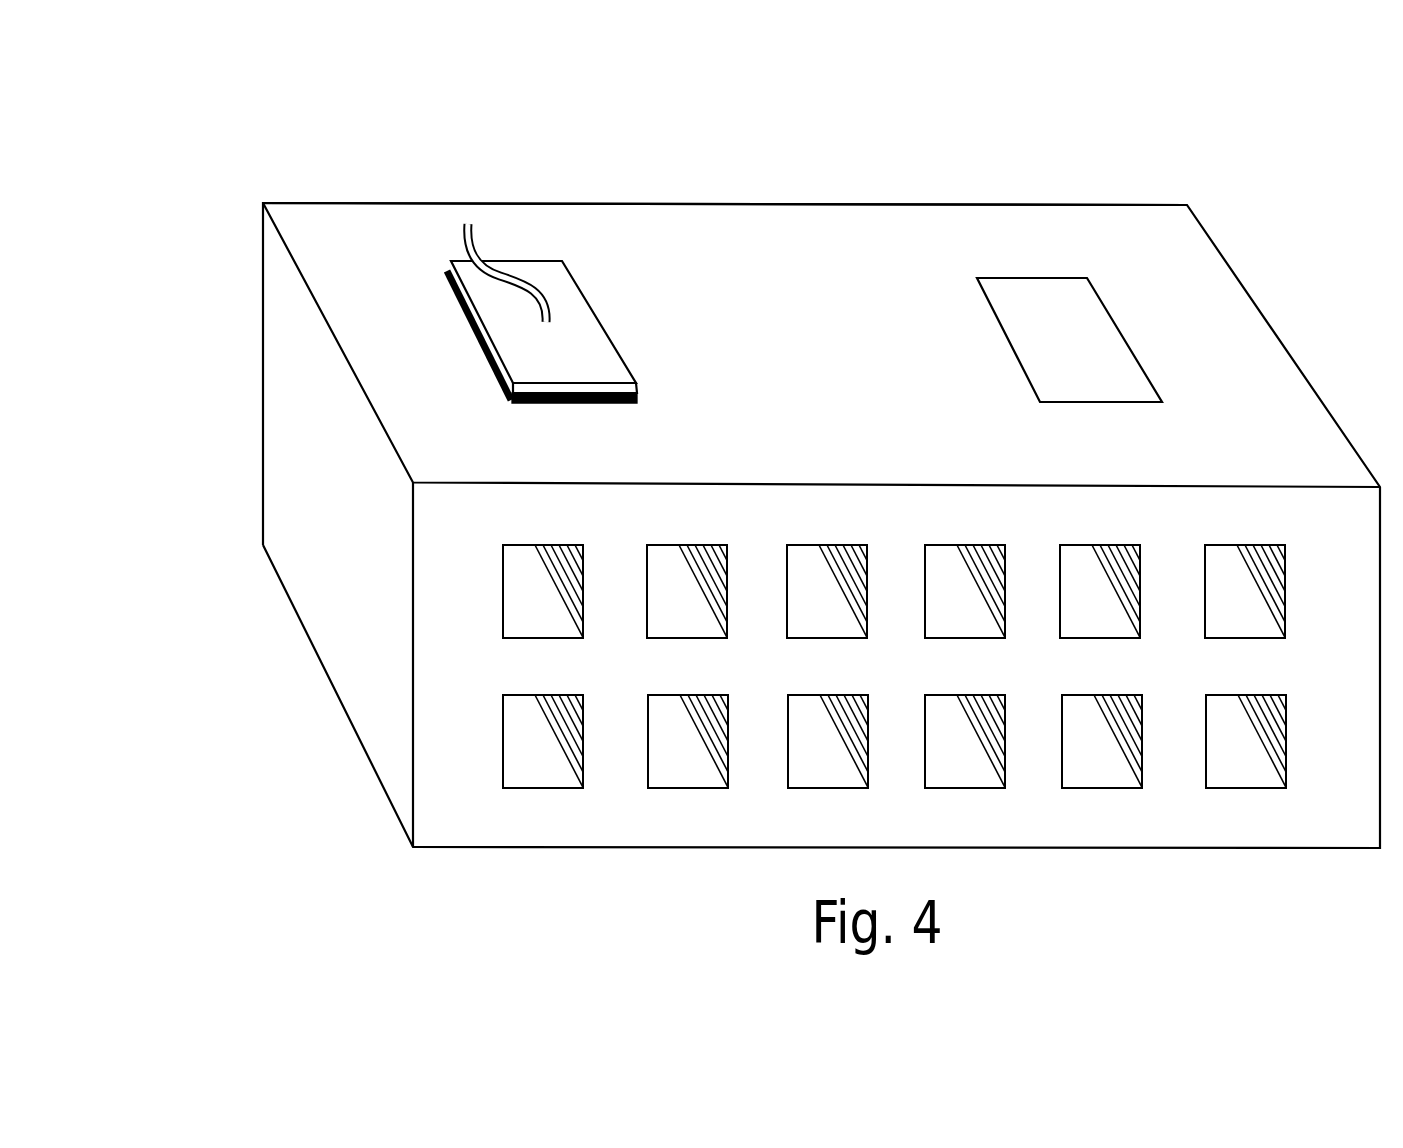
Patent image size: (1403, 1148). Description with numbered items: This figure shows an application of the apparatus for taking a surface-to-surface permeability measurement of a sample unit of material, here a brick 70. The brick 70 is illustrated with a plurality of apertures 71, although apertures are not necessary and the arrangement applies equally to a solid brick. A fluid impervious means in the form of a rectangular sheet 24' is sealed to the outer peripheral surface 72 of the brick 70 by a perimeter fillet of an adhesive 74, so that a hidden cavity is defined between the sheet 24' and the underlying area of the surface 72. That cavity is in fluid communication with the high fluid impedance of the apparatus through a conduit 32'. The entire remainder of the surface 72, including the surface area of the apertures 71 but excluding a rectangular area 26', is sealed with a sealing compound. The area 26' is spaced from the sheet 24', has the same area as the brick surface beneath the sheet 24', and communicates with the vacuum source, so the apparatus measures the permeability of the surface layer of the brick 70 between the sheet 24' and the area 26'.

The brick 70 is at (801, 525).
The apertures 71 is at (818, 610).
The outer peripheral surface 72 is at (1180, 237).
The adhesive 74 is at (458, 305).
The rectangular sheet 24' is at (555, 253).
The rectangular area 26' is at (1069, 252).
The conduit 32' is at (507, 207).